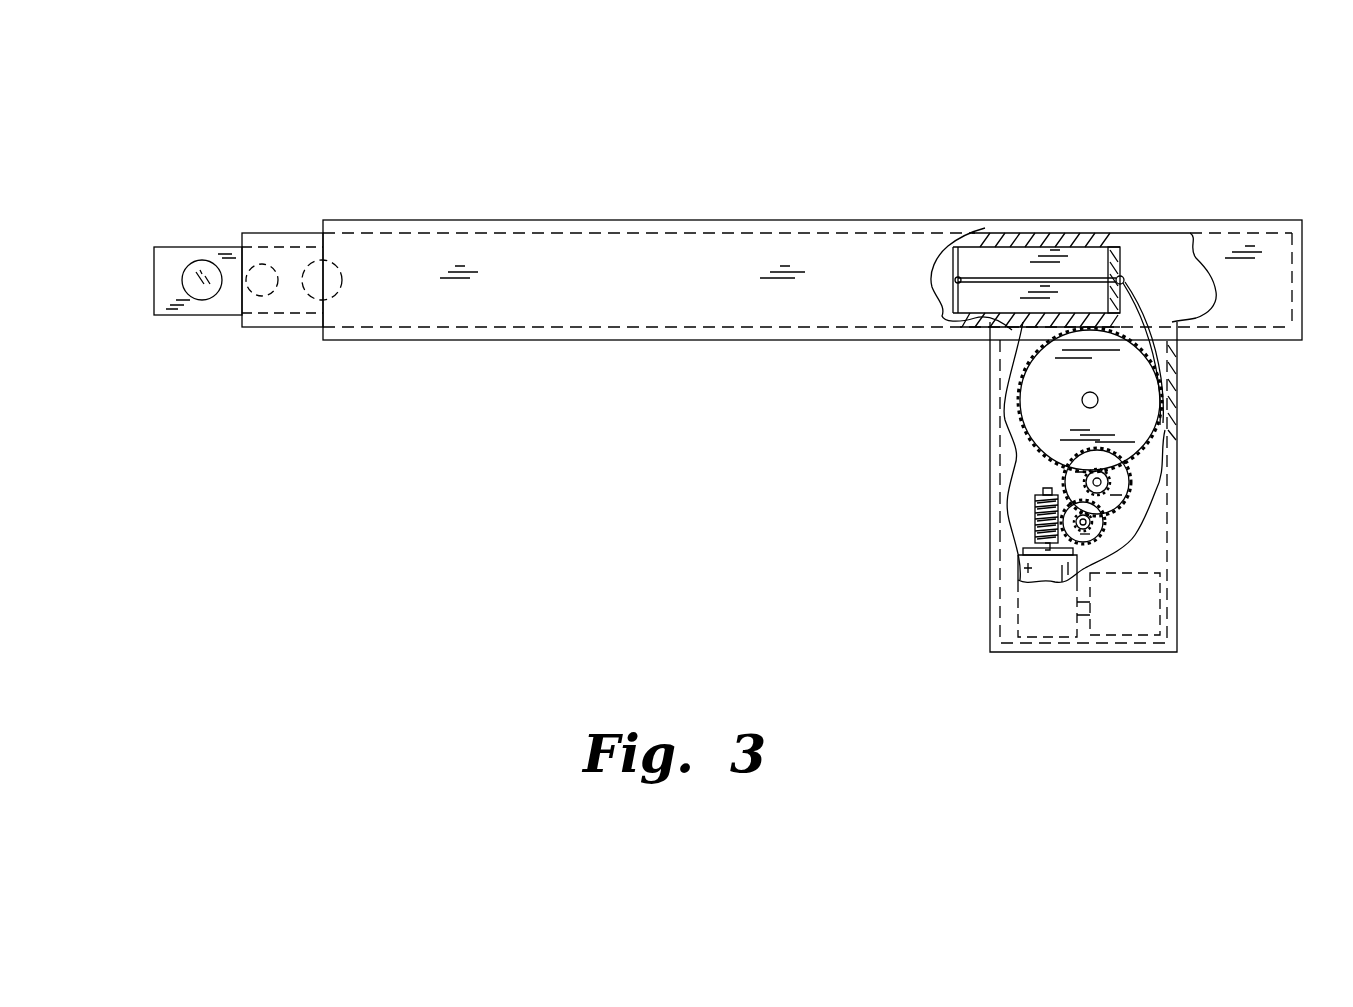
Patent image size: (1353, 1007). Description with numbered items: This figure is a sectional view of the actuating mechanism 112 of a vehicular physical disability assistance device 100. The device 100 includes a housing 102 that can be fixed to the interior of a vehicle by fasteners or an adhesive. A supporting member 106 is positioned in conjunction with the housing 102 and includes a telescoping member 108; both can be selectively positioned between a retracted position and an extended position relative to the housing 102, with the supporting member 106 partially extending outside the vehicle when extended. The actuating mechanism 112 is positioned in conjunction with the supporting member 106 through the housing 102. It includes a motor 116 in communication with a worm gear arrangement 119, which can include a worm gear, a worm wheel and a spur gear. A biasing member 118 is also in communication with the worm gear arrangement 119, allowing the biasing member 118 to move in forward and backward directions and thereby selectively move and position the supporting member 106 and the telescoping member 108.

The vehicular physical disability assistance device 100 is at (292, 146).
The housing 102 is at (675, 225).
The supporting member 106 is at (283, 232).
The telescoping member 108 is at (193, 247).
The actuating mechanism 112 is at (974, 522).
The motor 116 is at (1030, 568).
The biasing member 118 is at (1030, 268).
The worm gear arrangement 119 is at (1150, 495).